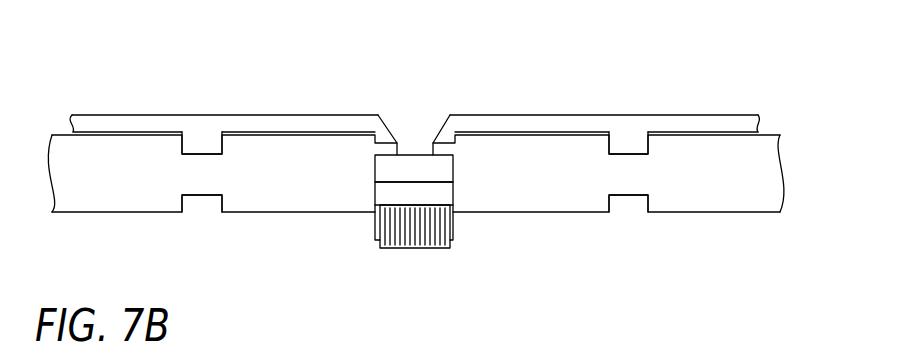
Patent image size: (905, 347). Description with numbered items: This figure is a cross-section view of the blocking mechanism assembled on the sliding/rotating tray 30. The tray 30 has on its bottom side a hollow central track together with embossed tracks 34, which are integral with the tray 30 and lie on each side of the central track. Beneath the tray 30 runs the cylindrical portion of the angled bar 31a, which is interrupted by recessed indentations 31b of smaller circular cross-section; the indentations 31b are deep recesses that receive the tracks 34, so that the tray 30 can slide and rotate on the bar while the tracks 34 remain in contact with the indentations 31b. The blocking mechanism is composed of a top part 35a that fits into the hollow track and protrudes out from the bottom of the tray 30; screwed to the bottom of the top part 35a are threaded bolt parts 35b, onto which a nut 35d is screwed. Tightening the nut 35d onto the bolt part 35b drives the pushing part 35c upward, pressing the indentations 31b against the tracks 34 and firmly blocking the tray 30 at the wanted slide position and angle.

The sliding/rotating tray 30 is at (565, 118).
The cylindrical portion of angled bar 31a is at (113, 212).
The indentations 31b is at (202, 195).
The embossed tracks 34 is at (202, 142).
The top part of blocking mechanism 35a is at (431, 121).
The threaded bolt part 35b is at (375, 170).
The pushing part 35c is at (453, 193).
The nut 35d is at (415, 243).